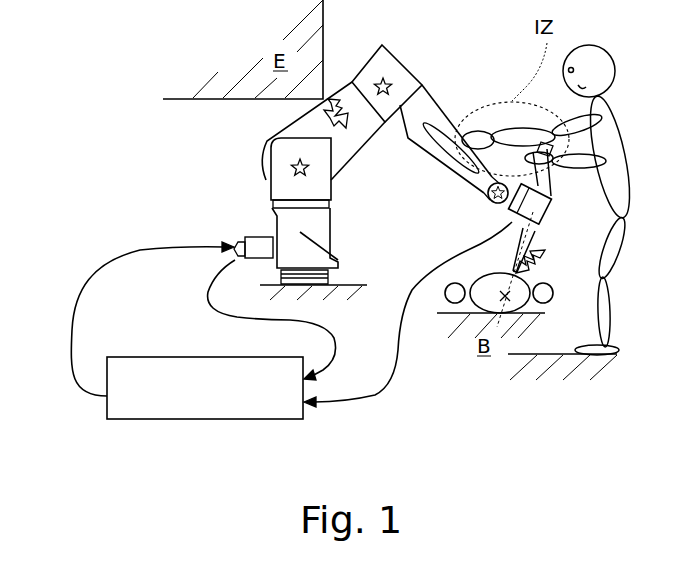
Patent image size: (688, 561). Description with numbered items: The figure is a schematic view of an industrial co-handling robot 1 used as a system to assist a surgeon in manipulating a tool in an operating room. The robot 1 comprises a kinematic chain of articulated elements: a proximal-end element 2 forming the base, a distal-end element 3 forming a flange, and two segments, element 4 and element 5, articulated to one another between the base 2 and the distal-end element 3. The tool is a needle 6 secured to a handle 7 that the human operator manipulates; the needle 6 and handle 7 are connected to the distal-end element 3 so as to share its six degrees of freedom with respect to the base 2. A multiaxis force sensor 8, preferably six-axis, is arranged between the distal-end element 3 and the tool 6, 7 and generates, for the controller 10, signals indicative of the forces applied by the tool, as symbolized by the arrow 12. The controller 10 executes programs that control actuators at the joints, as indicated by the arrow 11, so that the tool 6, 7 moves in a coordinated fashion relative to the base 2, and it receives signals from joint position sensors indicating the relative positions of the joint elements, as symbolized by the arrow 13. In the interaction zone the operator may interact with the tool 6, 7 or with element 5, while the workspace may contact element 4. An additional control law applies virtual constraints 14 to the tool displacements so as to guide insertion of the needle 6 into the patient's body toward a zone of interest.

The industrial co-handling robot 1 is at (140, 170).
The proximal-end element 2 is at (318, 228).
The distal-end element 3 is at (510, 208).
The element 4 is at (353, 140).
The element 5 is at (435, 105).
The needle 6 is at (538, 232).
The handle 7 is at (547, 175).
The multiaxis force sensor 8 is at (510, 220).
The controller 10 is at (218, 398).
The arrow 11 is at (92, 270).
The arrow 12 is at (397, 378).
The arrow 13 is at (210, 288).
The virtual constraints 14 is at (513, 295).